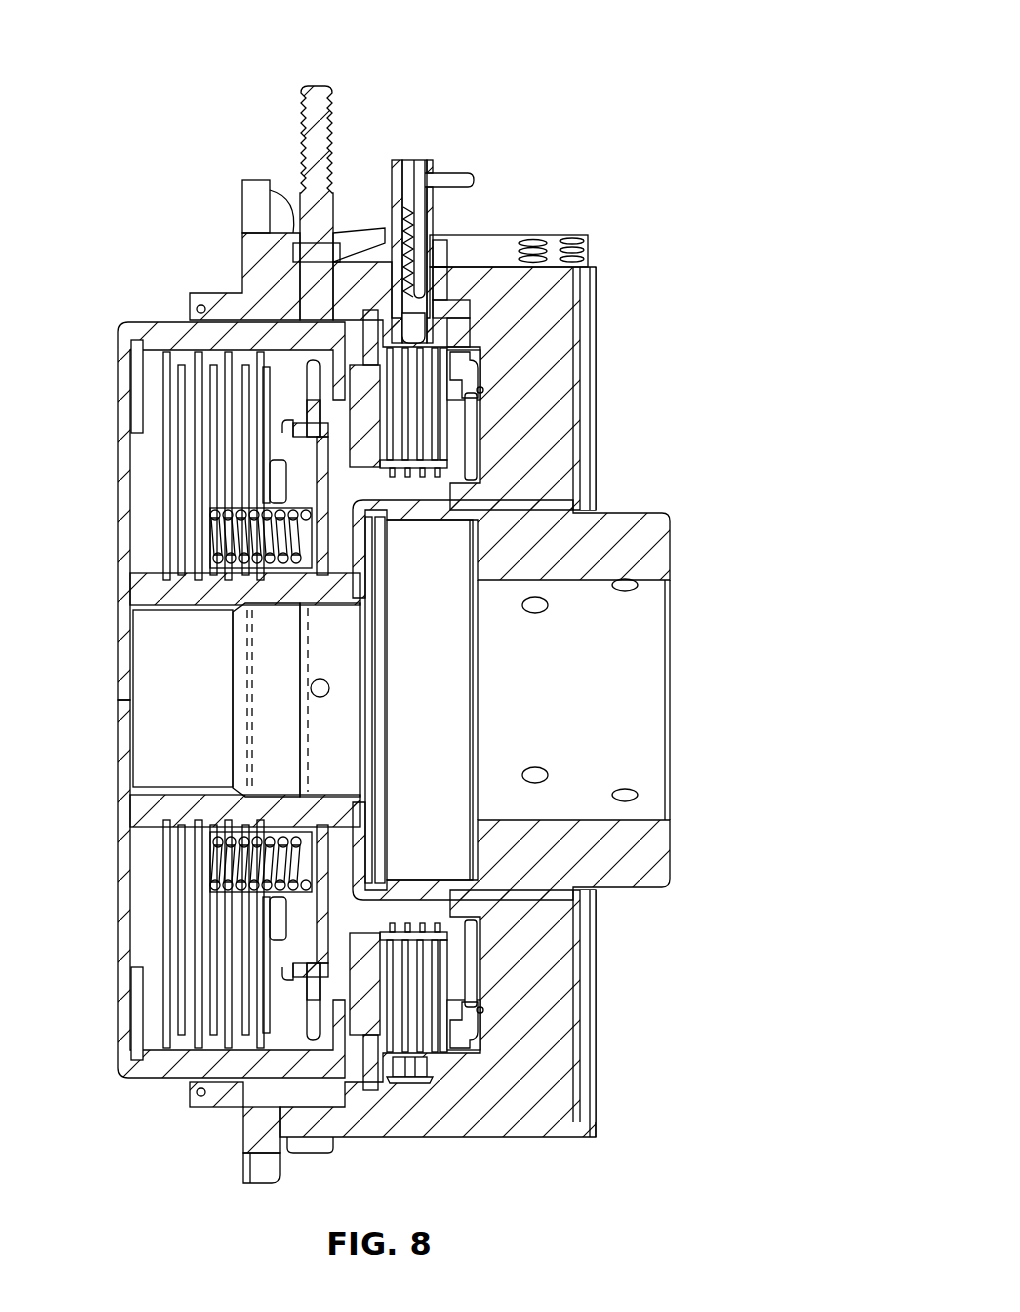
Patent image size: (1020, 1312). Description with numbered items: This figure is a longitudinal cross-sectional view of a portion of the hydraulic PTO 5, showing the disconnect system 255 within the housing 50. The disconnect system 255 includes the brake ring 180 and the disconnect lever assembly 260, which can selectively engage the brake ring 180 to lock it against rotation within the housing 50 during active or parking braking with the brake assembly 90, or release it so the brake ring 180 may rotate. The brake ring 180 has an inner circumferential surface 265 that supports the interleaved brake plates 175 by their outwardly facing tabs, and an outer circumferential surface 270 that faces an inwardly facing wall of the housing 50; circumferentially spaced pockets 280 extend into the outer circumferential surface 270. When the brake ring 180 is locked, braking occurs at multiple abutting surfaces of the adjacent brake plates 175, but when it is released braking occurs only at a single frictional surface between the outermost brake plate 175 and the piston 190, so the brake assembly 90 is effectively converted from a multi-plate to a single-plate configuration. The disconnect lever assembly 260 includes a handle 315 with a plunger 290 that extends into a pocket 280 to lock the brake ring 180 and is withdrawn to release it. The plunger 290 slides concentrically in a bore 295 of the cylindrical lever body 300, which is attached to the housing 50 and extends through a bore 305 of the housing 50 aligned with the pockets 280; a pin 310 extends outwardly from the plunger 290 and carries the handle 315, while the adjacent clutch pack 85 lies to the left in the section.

The clutch assembly 5 is at (661, 100).
The housing 50 is at (596, 226).
The first clutch pack housing 85 is at (144, 519).
The brake assembly 90 is at (418, 496).
The brake plates 175 is at (427, 433).
The brake ring 180 is at (452, 334).
The piston 190 is at (492, 358).
The disconnect system 255 is at (442, 83).
The disconnect lever assembly 260 is at (466, 129).
The inner circumferential surface 265 is at (510, 696).
The outer circumferential surface 270 is at (450, 316).
The pockets 280 is at (370, 335).
The plunger 290 is at (402, 308).
The bore 295 is at (434, 272).
The cylindrical lever body 300 is at (378, 156).
The bore 305 is at (448, 268).
The pin 310 is at (420, 218).
The handle 315 is at (472, 183).